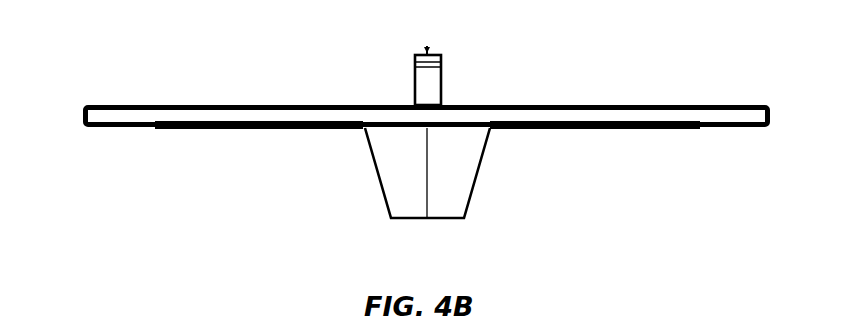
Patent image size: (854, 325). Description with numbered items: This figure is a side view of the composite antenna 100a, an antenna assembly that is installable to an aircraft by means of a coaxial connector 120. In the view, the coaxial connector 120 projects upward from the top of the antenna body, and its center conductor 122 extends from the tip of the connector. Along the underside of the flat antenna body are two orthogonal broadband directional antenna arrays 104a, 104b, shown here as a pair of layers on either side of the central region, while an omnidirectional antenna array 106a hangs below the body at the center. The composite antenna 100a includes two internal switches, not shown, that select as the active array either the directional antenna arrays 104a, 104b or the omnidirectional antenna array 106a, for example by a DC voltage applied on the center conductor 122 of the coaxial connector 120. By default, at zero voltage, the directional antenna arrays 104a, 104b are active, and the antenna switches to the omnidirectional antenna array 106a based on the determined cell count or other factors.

The composite antenna 100a is at (113, 52).
The broadband directional antenna array 104a is at (258, 130).
The broadband directional antenna array 104b is at (597, 129).
The omnidirectional antenna array 106a is at (476, 176).
The coaxial connector 120 is at (446, 76).
The center conductor 122 is at (425, 48).